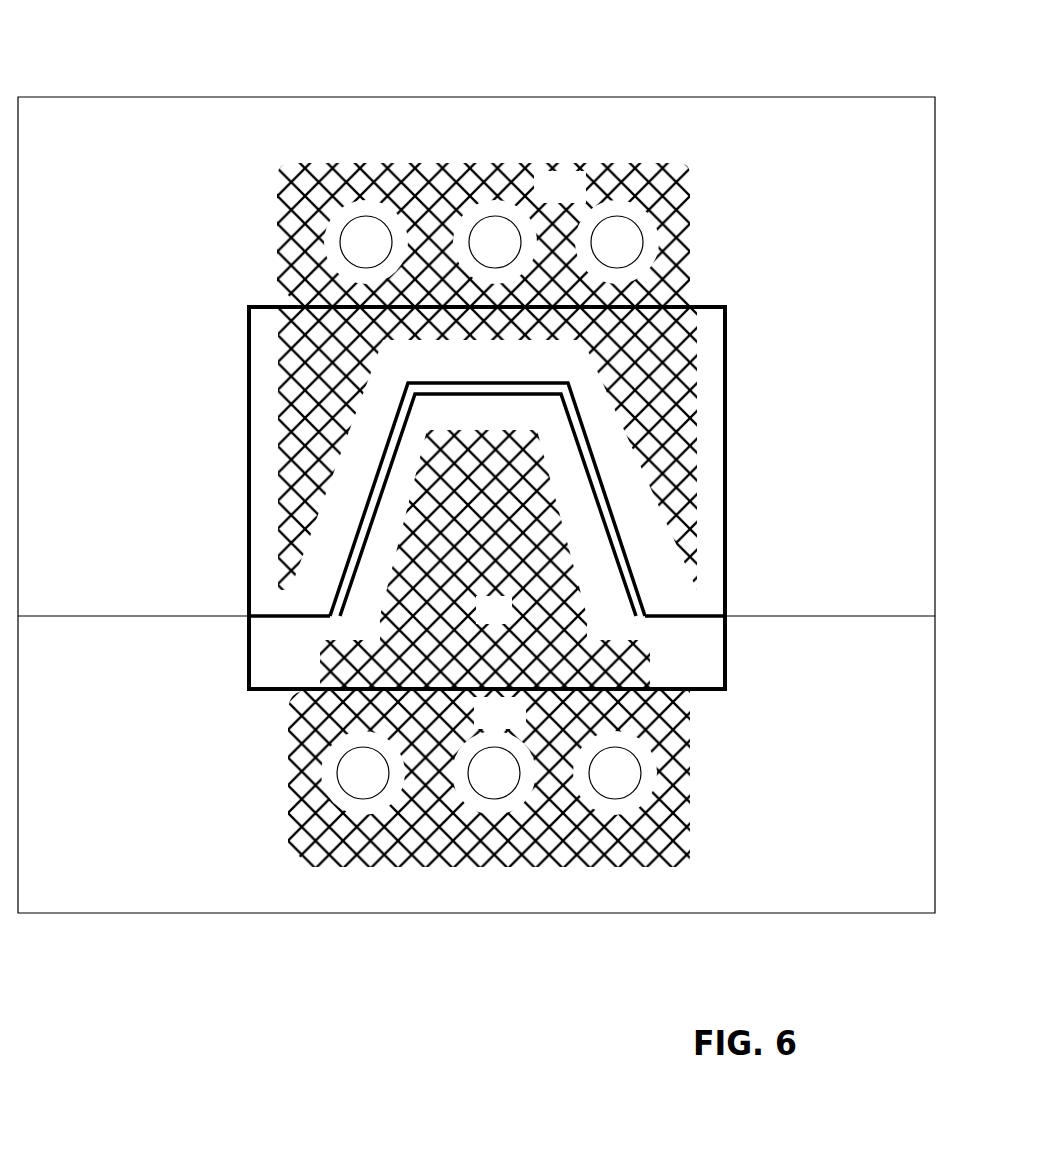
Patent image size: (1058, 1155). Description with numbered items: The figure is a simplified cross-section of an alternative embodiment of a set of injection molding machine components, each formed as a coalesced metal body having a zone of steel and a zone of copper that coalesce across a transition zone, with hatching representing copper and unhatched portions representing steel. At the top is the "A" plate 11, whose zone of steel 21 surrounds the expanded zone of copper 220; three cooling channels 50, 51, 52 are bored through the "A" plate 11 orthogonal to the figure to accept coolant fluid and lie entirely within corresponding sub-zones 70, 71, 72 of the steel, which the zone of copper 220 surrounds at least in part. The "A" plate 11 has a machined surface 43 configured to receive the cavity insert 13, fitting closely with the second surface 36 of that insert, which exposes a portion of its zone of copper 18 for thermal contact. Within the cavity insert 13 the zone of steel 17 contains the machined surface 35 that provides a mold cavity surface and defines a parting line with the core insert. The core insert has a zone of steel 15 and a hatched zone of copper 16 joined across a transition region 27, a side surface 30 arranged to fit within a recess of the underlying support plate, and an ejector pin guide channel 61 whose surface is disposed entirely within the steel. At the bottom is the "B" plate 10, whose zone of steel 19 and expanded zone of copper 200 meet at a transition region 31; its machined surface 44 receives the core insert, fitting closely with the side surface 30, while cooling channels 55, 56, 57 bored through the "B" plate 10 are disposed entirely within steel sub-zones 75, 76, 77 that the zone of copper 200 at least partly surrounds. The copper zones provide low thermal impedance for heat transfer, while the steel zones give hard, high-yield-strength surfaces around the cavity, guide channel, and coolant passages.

The "B" plate 10 is at (237, 882).
The "A" plate 11 is at (207, 125).
The cavity insert 13 is at (722, 332).
The zone of steel 15 is at (667, 659).
The zone of copper 16 is at (480, 622).
The zone of steel 17 is at (462, 374).
The zone of copper 18 is at (655, 374).
The zone of steel 19 is at (210, 751).
The zone of steel 21 is at (240, 284).
The transition region 27 is at (400, 503).
The side surface 30 is at (252, 655).
The transition region 31 is at (272, 787).
The machined surface 35 is at (350, 552).
The second surface 36 is at (722, 404).
The machined surface 43 is at (248, 445).
The machined surface 44 is at (270, 645).
The cooling channel 50 is at (358, 247).
The cooling channel 51 is at (516, 217).
The cooling channel 52 is at (623, 242).
The cooling channel 55 is at (362, 785).
The cooling channel 56 is at (498, 777).
The cooling channel 57 is at (617, 790).
The ejector pin guide channel 61 is at (440, 607).
The sub-zone of the zone of steel 70 is at (330, 235).
The sub-zone of the zone of steel 71 is at (488, 237).
The sub-zone of the zone of steel 72 is at (650, 253).
The sub-zone of the zone of steel 75 is at (380, 802).
The sub-zone of the zone of steel 76 is at (482, 805).
The sub-zone of the zone of steel 77 is at (645, 790).
The zone of copper 200 is at (478, 726).
The zone of copper 220 is at (538, 201).